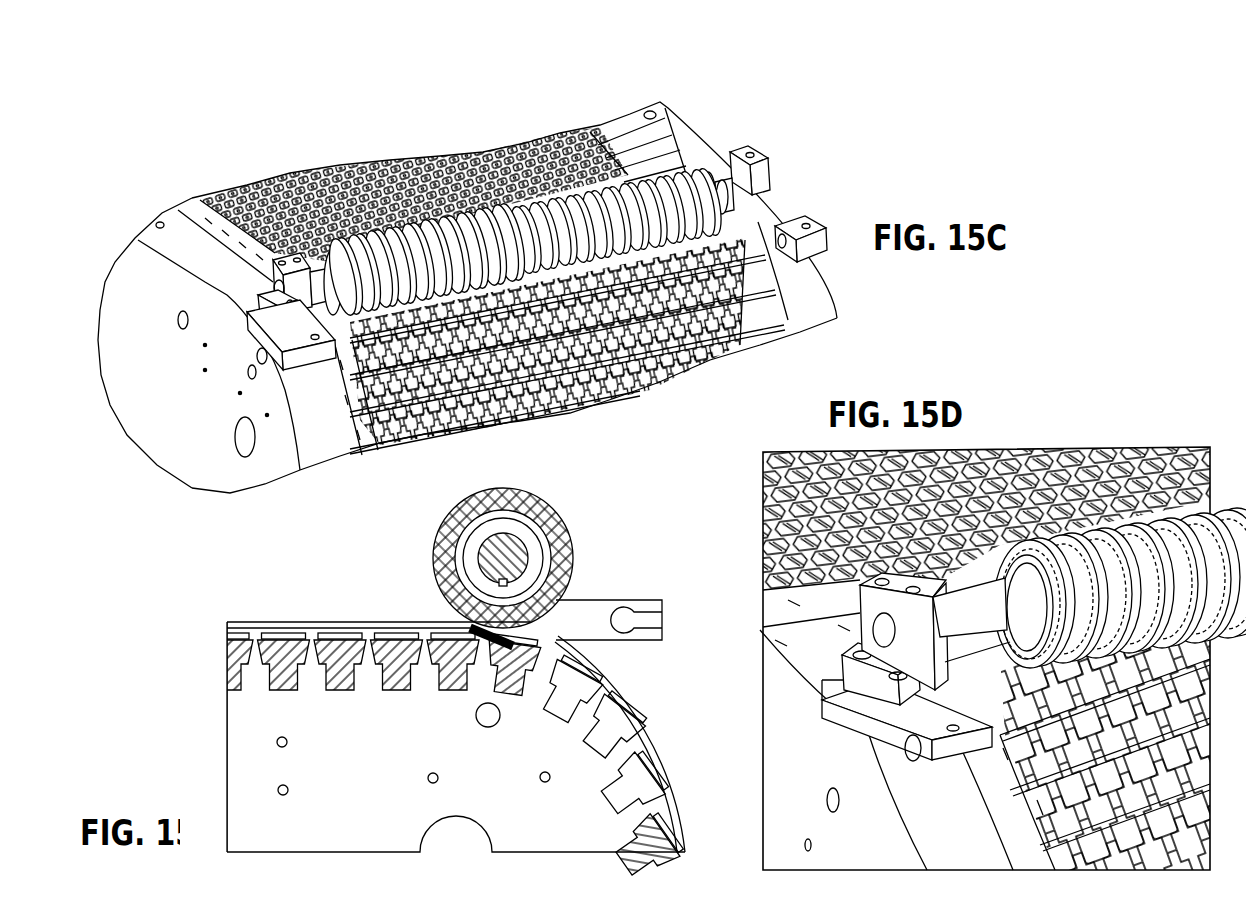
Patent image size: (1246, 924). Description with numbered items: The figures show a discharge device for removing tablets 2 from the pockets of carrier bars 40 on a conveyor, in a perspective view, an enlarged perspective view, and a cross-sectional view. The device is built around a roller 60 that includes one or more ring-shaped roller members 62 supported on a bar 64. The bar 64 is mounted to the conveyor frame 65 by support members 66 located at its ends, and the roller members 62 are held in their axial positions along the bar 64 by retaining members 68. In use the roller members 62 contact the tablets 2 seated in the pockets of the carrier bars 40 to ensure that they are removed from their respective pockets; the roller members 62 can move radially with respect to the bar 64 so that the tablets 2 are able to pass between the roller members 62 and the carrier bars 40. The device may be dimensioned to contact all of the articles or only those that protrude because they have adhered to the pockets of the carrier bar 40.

In FIG. 15D, the tablet 2 is at (982, 663).
In FIG. 15E, the tablet 2 is at (483, 660).
In FIG. 15C, the carrier bar 40 is at (350, 365).
In FIG. 15D, the carrier bar 40 is at (985, 677).
In FIG. 15E, the carrier bar 40 is at (510, 687).
In FIG. 15C, the roller 60 is at (511, 210).
In FIG. 15D, the roller 60 is at (1089, 515).
In FIG. 15E, the roller 60 is at (546, 548).
In FIG. 15C, the ring-shaped roller member 62 is at (457, 213).
In FIG. 15D, the ring-shaped roller member 62 is at (1100, 533).
In FIG. 15E, the ring-shaped roller member 62 is at (568, 562).
In FIG. 15C, the bar 64 is at (272, 183).
In FIG. 15D, the bar 64 is at (991, 618).
In FIG. 15E, the bar 64 is at (505, 540).
In FIG. 15C, the conveyor frame 65 is at (160, 445).
In FIG. 15D, the conveyor frame 65 is at (790, 727).
In FIG. 15C, the support member 66 is at (280, 270).
In FIG. 15D, the support member 66 is at (868, 590).
In FIG. 15C, the retaining member 68 is at (322, 277).